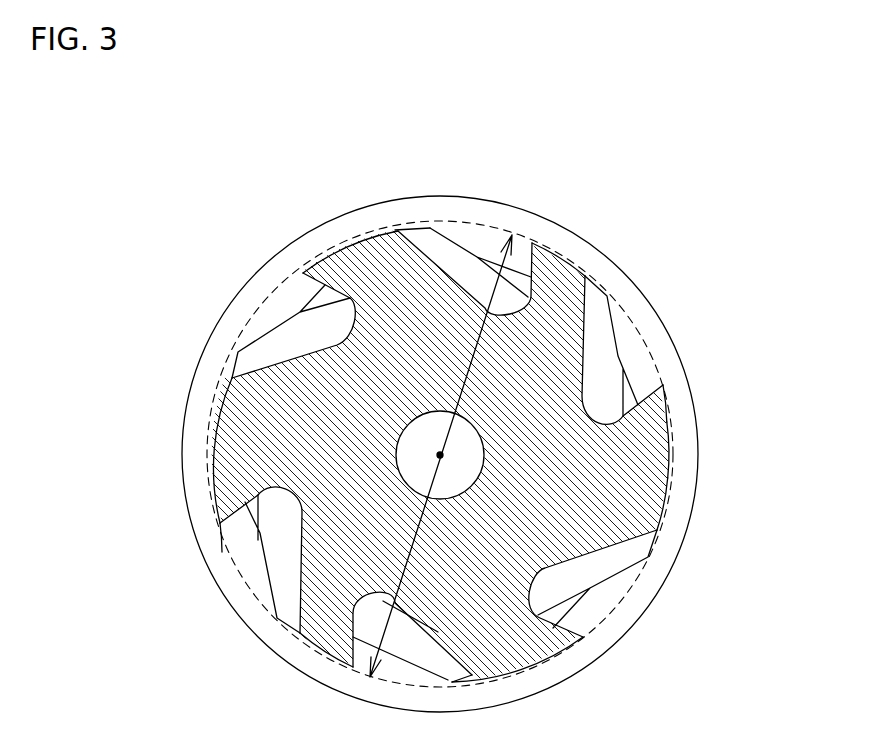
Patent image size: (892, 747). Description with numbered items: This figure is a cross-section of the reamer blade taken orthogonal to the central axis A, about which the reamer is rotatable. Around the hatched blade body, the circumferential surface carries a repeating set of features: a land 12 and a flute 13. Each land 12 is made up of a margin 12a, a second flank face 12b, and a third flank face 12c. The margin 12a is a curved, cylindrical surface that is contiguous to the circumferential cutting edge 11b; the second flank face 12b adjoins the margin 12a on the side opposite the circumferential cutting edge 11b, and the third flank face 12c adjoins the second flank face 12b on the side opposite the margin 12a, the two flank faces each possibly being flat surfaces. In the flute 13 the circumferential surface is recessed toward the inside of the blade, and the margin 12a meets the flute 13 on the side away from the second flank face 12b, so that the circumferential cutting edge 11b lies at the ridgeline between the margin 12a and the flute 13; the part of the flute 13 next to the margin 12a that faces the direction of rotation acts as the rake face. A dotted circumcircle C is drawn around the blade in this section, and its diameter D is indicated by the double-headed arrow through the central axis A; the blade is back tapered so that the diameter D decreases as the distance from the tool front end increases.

The circumferential cutting edge 11b is at (663, 387).
The land 12 is at (515, 454).
The margin 12a is at (667, 396).
The second flank face 12b is at (672, 435).
The third flank face 12c is at (667, 490).
The flute 13 is at (663, 386).
The central axis A is at (440, 455).
The circumcircle C is at (236, 558).
The diameter D is at (490, 288).